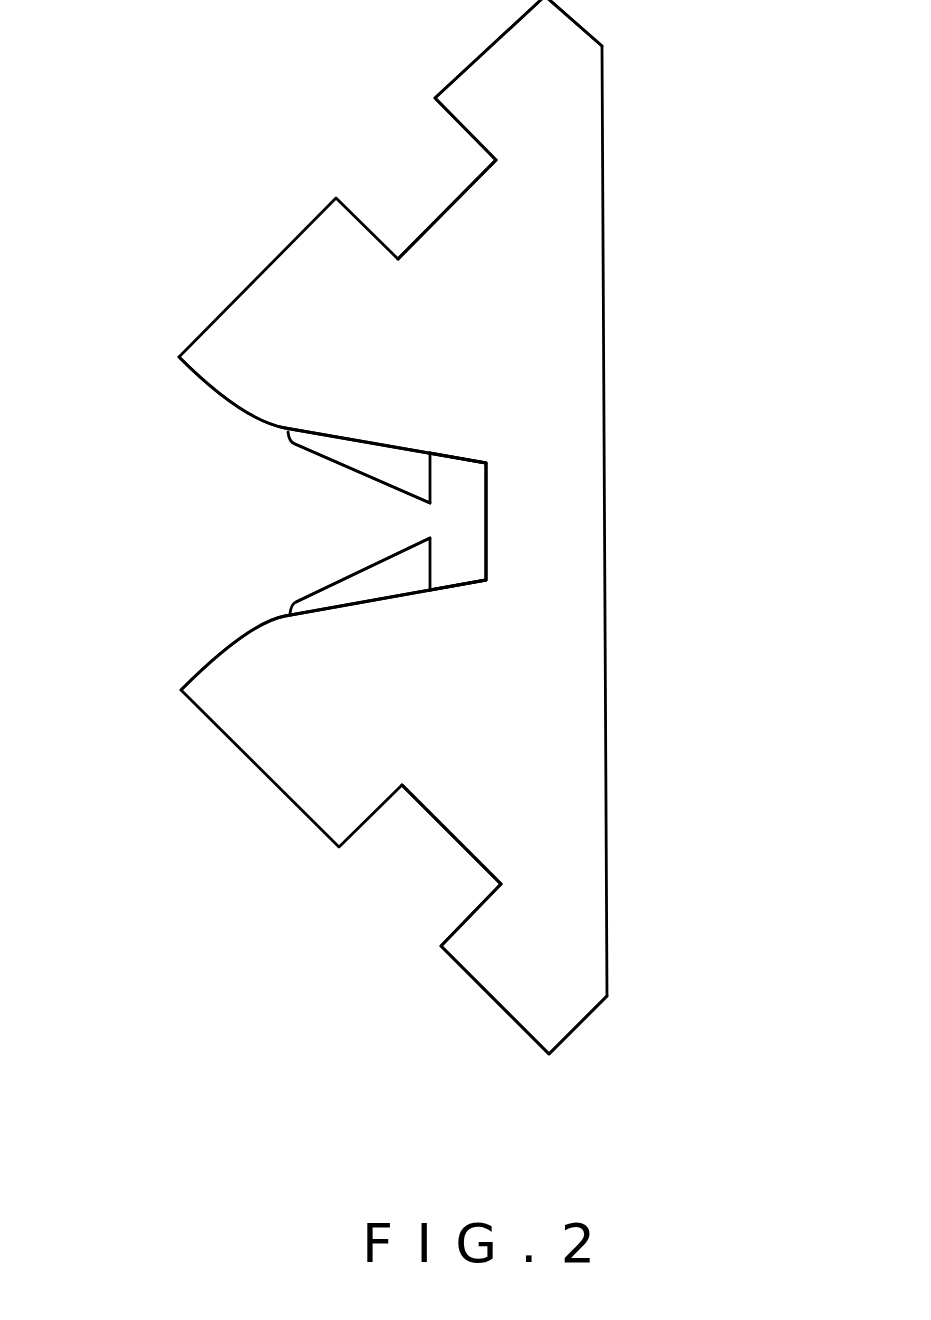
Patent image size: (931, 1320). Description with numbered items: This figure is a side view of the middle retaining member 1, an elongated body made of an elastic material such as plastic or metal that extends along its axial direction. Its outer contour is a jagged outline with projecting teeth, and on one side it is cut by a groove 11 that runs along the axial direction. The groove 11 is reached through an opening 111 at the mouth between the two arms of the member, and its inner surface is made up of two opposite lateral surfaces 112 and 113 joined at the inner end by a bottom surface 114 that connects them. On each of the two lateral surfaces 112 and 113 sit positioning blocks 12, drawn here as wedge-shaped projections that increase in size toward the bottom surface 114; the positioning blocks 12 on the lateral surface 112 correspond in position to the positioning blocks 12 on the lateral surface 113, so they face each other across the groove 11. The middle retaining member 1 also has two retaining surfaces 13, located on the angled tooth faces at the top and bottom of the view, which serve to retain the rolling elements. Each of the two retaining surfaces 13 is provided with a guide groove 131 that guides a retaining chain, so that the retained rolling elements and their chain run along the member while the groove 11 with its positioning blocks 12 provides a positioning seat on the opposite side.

The middle retaining member 1 is at (583, 175).
The groove 11 is at (464, 528).
The opening 111 is at (295, 538).
The lateral surface 112 is at (343, 437).
The lateral surface 113 is at (363, 607).
The bottom surface 114 is at (487, 556).
The positioning block 12 is at (415, 482).
The retaining surface 13 is at (473, 57).
The guide groove 131 is at (415, 167).